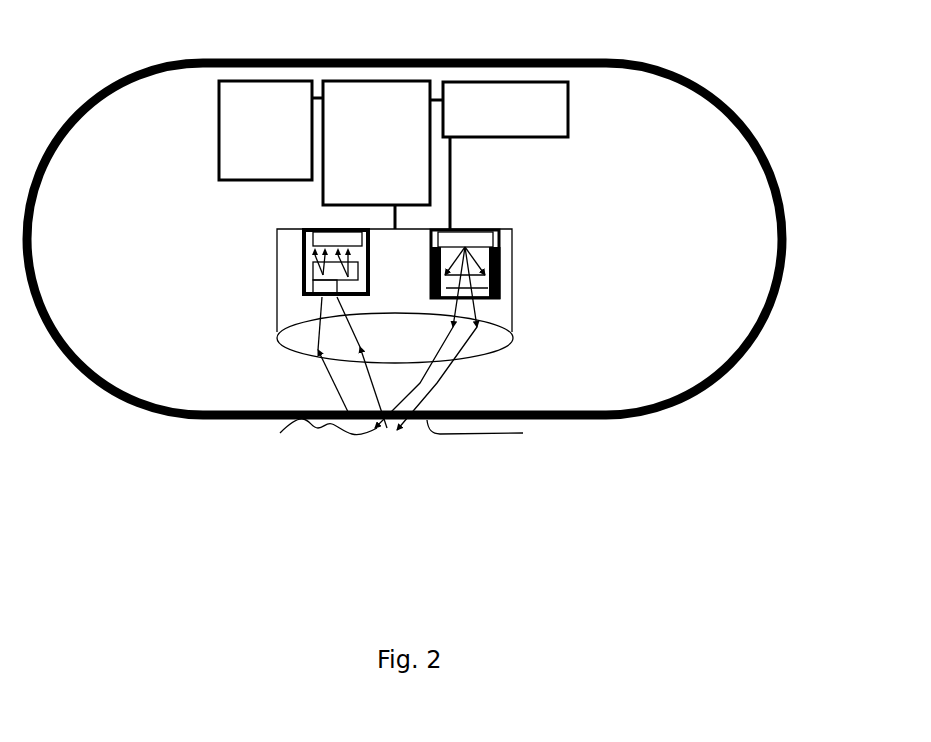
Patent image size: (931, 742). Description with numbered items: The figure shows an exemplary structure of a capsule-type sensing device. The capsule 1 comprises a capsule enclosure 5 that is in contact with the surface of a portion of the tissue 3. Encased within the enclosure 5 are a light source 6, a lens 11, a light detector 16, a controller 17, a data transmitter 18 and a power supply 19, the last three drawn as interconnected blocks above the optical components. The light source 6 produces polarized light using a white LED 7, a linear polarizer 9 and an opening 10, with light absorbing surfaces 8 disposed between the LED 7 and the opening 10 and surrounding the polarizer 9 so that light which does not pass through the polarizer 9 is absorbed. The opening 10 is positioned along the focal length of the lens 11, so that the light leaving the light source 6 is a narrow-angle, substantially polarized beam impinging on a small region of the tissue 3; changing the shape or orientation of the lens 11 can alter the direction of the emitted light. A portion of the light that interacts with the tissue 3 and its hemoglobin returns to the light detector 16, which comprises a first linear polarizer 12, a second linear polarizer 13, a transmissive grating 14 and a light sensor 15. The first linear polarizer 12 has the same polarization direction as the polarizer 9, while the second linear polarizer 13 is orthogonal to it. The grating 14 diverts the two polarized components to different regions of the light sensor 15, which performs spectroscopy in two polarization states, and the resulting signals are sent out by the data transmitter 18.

The capsule 1 is at (404, 245).
The tissue 3 is at (457, 435).
The capsule enclosure 5 is at (585, 60).
The light source 6 is at (458, 228).
The LED 7 is at (463, 240).
The light absorbing surfaces 8 is at (499, 262).
The linear polarizer 9 is at (499, 272).
The opening 10 is at (473, 285).
The lens 11 is at (505, 330).
The first linear polarizer 12 is at (337, 292).
The second linear polarizer 13 is at (320, 288).
The transmissive grating 14 is at (323, 271).
The light sensor 15 is at (325, 236).
The light detector 16 is at (338, 223).
The controller 17 is at (271, 130).
The data transmitter 18 is at (383, 155).
The power supply 19 is at (505, 156).